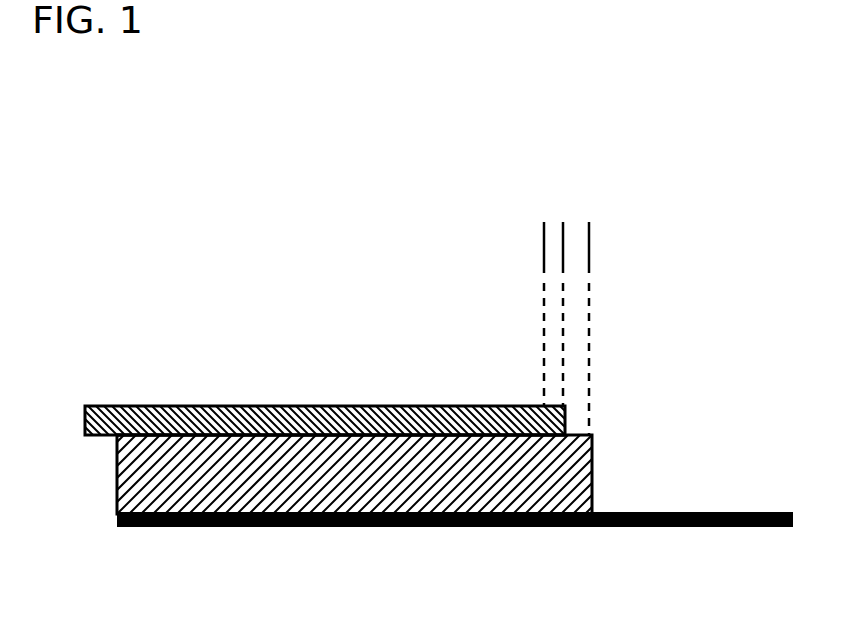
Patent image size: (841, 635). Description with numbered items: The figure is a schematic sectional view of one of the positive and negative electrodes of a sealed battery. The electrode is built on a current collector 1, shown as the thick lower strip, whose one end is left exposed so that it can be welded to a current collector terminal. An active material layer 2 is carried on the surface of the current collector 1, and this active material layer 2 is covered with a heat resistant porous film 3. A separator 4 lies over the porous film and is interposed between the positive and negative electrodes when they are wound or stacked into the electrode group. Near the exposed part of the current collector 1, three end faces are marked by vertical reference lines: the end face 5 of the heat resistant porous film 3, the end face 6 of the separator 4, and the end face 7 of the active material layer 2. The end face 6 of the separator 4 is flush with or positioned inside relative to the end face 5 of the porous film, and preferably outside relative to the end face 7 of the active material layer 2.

The current collector 1 is at (590, 528).
The positive/negative electrode active material layer 2 is at (430, 528).
The heat resistant porous film 3 is at (455, 432).
The separator 4 is at (330, 405).
The end face of porous film 5 is at (598, 295).
The end face of separator 6 is at (564, 277).
The end face of active material layer 7 is at (537, 287).